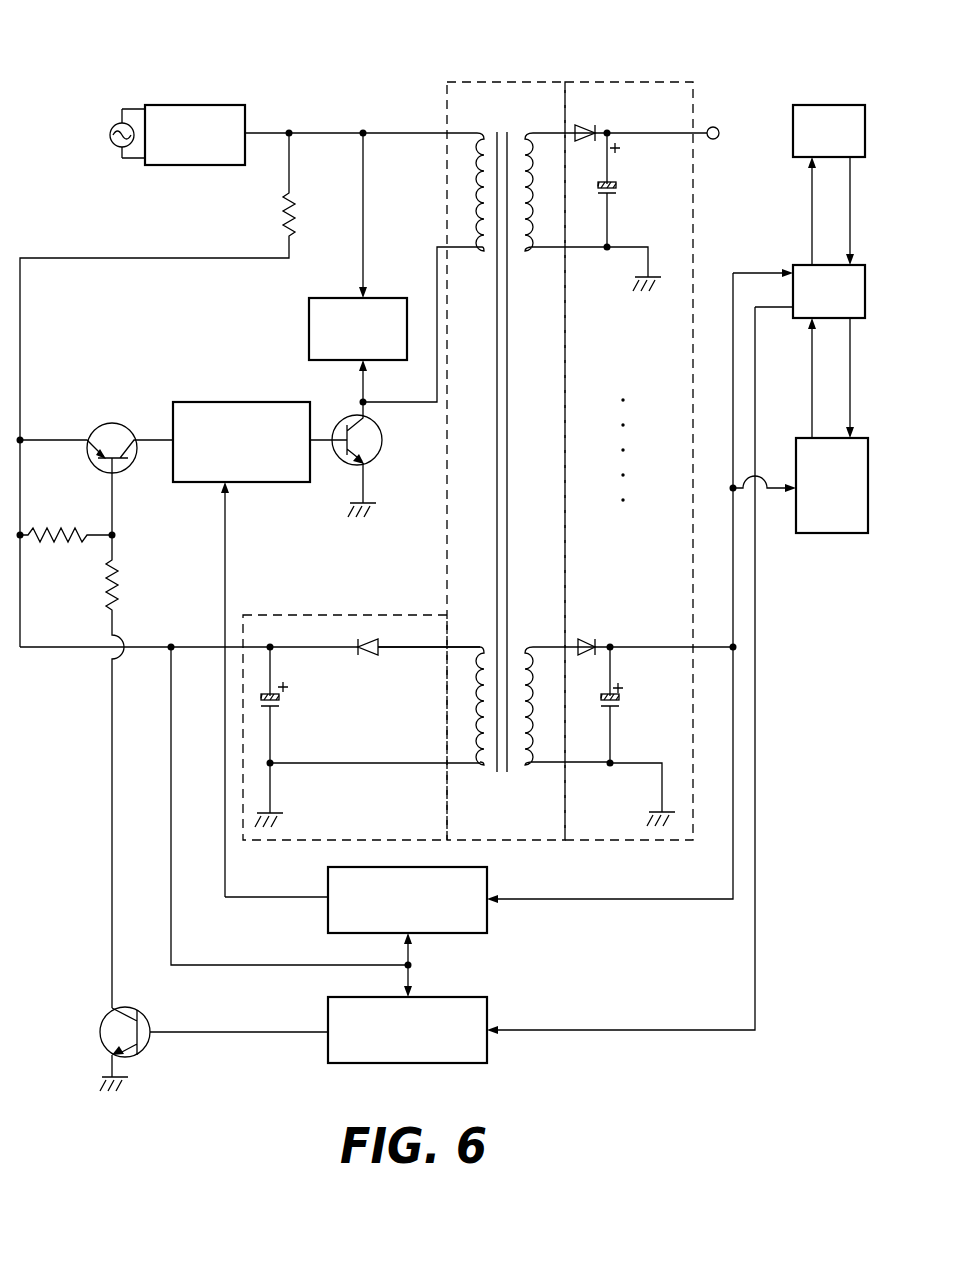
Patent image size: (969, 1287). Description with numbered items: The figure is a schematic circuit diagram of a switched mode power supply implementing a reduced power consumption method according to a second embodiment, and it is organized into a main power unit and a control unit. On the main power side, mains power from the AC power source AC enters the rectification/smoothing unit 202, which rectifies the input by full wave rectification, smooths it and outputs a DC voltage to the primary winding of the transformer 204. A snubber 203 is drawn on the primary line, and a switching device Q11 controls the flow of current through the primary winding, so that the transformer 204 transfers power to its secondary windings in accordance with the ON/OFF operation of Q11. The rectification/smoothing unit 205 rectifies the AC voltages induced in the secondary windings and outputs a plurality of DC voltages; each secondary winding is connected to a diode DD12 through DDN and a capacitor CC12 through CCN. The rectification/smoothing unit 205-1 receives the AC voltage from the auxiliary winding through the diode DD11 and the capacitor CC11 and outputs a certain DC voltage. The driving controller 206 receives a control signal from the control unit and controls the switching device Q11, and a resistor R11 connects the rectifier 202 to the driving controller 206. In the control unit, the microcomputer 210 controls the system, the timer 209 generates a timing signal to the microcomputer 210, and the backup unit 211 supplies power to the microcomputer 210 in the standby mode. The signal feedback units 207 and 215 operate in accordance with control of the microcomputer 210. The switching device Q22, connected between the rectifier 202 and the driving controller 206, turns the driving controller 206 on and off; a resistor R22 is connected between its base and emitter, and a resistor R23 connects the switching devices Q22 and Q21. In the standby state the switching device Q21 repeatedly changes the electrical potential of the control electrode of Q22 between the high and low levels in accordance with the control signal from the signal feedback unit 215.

The rectification/smoothing unit 202 is at (237, 105).
The snubber 203 is at (385, 298).
The transformer 204 is at (480, 82).
The rectification/smoothing unit 205 is at (626, 441).
The rectification/smoothing unit 205-1 is at (357, 749).
The driving controller 206 is at (194, 402).
The signal feedback unit 207 is at (490, 895).
The timer 209 is at (818, 105).
The microcomputer 210 is at (796, 265).
The backup unit 211 is at (857, 533).
The signal feedback unit 215 is at (490, 1028).
The AC power source AC is at (113, 125).
The resistor R11 is at (157, 390).
The resistor R22 is at (66, 521).
The resistor R23 is at (139, 771).
The switching device Q11 is at (382, 440).
The switching device Q21 is at (108, 1010).
The switching device Q22 is at (97, 428).
The diode DD11 is at (375, 665).
The diode DD12 is at (607, 115).
The diode DDN is at (625, 633).
The capacitor CC11 is at (306, 705).
The capacitor CC12 is at (641, 190).
The capacitor CCN is at (641, 705).